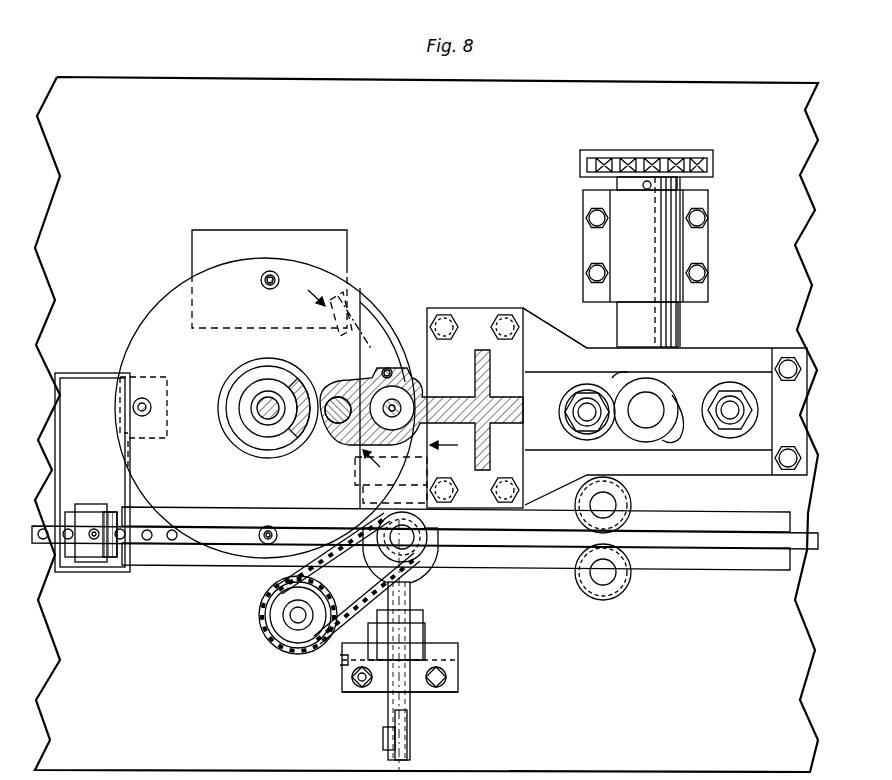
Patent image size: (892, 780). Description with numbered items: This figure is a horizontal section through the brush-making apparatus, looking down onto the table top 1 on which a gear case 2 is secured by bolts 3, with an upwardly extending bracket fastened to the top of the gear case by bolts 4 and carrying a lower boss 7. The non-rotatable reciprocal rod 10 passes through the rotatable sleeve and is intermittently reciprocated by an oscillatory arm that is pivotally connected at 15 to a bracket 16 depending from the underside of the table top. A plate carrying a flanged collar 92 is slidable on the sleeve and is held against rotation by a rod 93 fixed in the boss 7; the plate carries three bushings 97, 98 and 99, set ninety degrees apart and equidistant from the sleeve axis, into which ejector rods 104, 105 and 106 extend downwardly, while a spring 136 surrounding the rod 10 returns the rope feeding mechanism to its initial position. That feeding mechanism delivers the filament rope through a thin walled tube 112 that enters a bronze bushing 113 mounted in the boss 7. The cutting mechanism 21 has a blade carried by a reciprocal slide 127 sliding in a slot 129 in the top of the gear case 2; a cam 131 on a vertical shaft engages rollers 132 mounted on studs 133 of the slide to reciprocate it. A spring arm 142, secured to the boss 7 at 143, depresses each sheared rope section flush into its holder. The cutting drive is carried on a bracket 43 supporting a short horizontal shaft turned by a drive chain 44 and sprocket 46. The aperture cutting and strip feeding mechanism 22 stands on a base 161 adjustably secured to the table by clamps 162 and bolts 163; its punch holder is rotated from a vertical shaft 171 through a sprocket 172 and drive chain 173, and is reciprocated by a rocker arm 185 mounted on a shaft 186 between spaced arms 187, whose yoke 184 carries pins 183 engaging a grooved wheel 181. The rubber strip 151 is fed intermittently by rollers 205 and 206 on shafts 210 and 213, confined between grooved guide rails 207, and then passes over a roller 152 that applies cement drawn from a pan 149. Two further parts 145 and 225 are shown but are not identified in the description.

The table top 1 is at (426, 424).
The gear case 2 is at (740, 348).
The bolts 3 is at (788, 383).
The bolts 4 is at (458, 318).
The lower boss 7 is at (470, 400).
The non-rotatable reciprocal rod 10 is at (270, 422).
The pivotal connection 15 is at (356, 388).
The bracket 16 is at (451, 445).
The cutting mechanism 21 is at (568, 356).
The aperture cutting and strip feeding mechanism 22 is at (434, 630).
The bracket 43 is at (672, 248).
The drive chain 44 is at (678, 160).
The sprocket 46 is at (617, 183).
The flanged collar 92 is at (267, 390).
The rod 93 is at (332, 428).
The bushing 97 is at (261, 281).
The bushing 98 is at (155, 410).
The bushing 99 is at (259, 534).
The ejector rod 104 is at (270, 270).
The ejector rod 105 is at (148, 398).
The ejector rod 106 is at (270, 527).
The thin walled tube 112 is at (345, 436).
The bronze bushing 113 is at (382, 376).
The reciprocal slide 127 is at (566, 440).
The slot 129 is at (628, 380).
The cam 131 is at (676, 435).
The rollers 132 is at (720, 398).
The studs 133 is at (589, 425).
The spring 136 is at (232, 432).
The spring arm 142 is at (380, 326).
The securing point of spring arm 143 is at (378, 368).
The plate 145 is at (292, 230).
The pan 149 is at (86, 373).
The rubber strip 151 is at (150, 546).
The roller 152 is at (92, 512).
The base 161 is at (440, 604).
The clamps 162 is at (456, 691).
The bolts 163 is at (360, 689).
The vertical shaft 171 is at (290, 616).
The sprocket 172 is at (278, 642).
The drive chain 173 is at (310, 645).
The wheel 181 is at (424, 532).
The pins 183 is at (376, 530).
The yoke 184 is at (430, 576).
The rocker arm 185 is at (412, 713).
The shaft 186 is at (383, 742).
The spaced arms 187 is at (432, 654).
The roller 205 is at (616, 498).
The roller 206 is at (622, 588).
The grooved guide rails 207 is at (170, 521).
The shaft 210 is at (612, 512).
The shaft 213 is at (606, 582).
The screw 225 is at (95, 546).